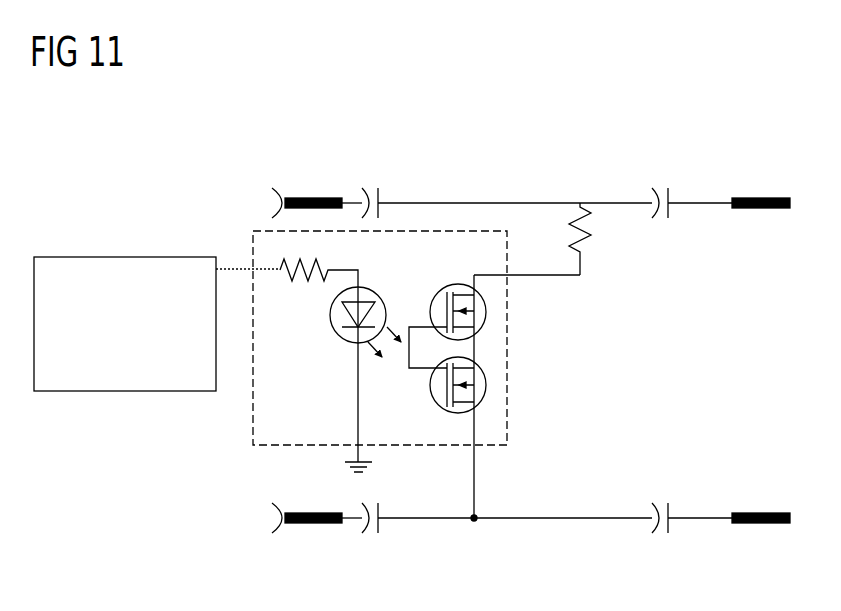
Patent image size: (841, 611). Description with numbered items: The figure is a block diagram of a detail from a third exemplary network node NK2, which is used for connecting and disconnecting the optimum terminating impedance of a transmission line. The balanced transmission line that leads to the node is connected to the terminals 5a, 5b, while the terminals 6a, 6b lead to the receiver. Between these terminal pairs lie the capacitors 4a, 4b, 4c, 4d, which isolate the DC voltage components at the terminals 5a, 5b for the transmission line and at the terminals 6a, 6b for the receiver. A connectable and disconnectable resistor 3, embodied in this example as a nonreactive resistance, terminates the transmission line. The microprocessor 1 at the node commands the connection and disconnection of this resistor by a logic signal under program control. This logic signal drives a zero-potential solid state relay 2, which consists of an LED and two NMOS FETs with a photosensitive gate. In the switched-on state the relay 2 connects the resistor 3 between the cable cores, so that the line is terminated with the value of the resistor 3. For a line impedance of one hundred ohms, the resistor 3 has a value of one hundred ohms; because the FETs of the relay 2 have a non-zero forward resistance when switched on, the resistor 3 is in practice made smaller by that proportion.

The microprocessor 1 is at (123, 257).
The zero-potential solid state relay 2 is at (507, 387).
The connectable and disconnectable resistor 3 is at (587, 235).
The capacitor 4a is at (668, 196).
The capacitor 4b is at (668, 525).
The capacitor 4c is at (378, 196).
The capacitor 4d is at (378, 525).
The terminal 5a is at (768, 198).
The terminal 5b is at (767, 513).
The terminal 6a is at (310, 198).
The terminal 6b is at (310, 523).
The network node NK2 is at (556, 157).